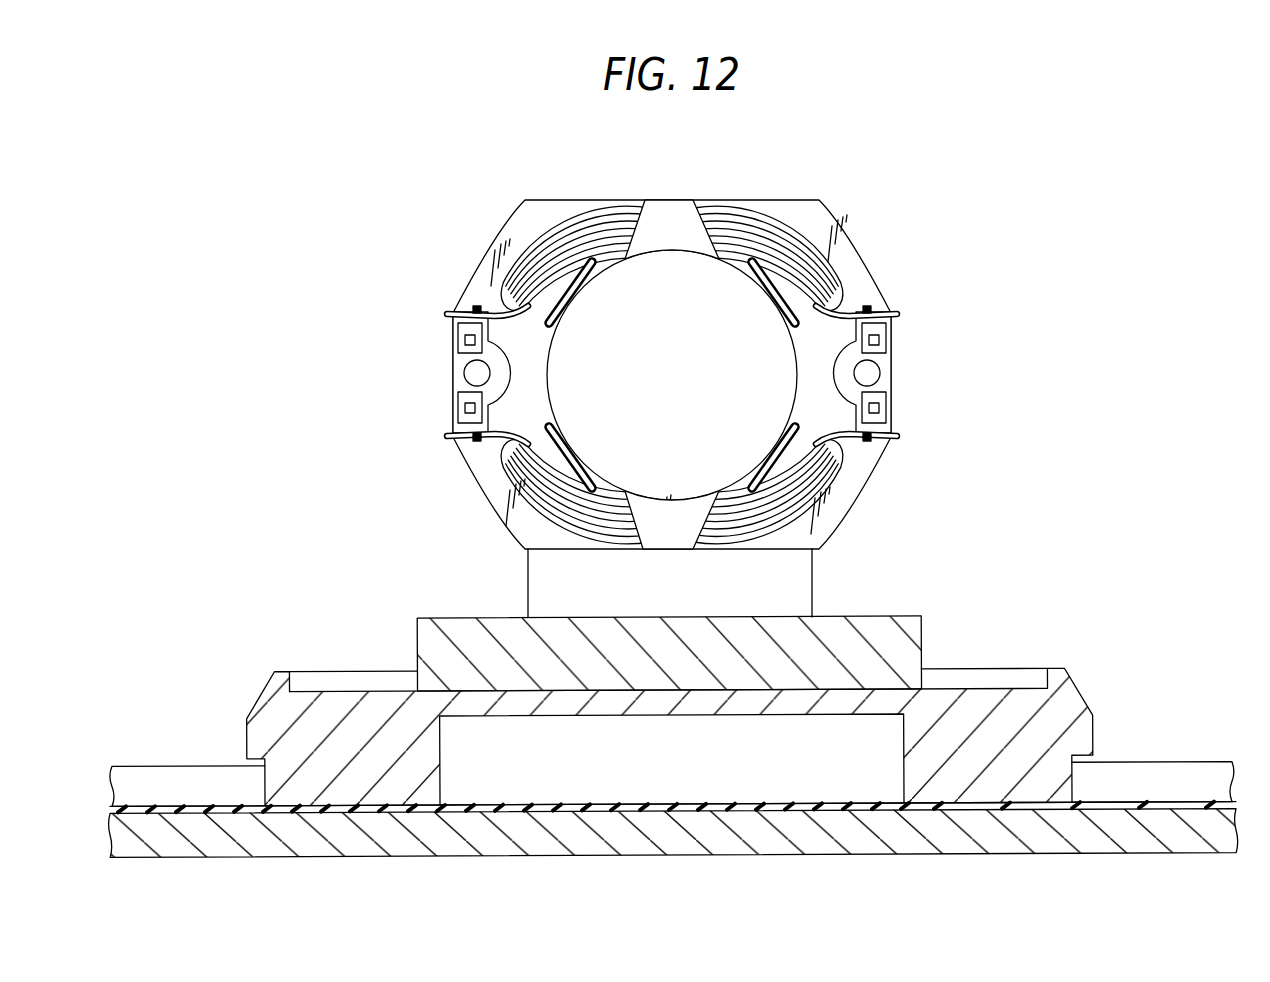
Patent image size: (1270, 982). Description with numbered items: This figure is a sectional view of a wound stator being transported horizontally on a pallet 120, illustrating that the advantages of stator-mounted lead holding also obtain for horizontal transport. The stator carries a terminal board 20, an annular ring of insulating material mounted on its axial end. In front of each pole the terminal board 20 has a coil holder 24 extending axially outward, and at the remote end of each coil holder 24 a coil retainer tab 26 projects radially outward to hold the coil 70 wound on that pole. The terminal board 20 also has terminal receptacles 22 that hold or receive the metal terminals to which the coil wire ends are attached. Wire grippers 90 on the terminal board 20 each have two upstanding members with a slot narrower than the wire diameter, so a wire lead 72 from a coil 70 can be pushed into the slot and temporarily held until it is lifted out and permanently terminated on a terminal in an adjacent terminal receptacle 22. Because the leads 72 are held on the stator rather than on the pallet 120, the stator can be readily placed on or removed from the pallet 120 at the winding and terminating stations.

The terminal board 20 is at (832, 515).
The terminal receptacle 22 is at (457, 398).
The coil holder 24 is at (580, 277).
The coil retainer tab 26 is at (678, 208).
The coil 70 is at (772, 237).
The wire lead 72 is at (460, 313).
The wire gripper 90 is at (473, 310).
The pallet 120 is at (1120, 665).